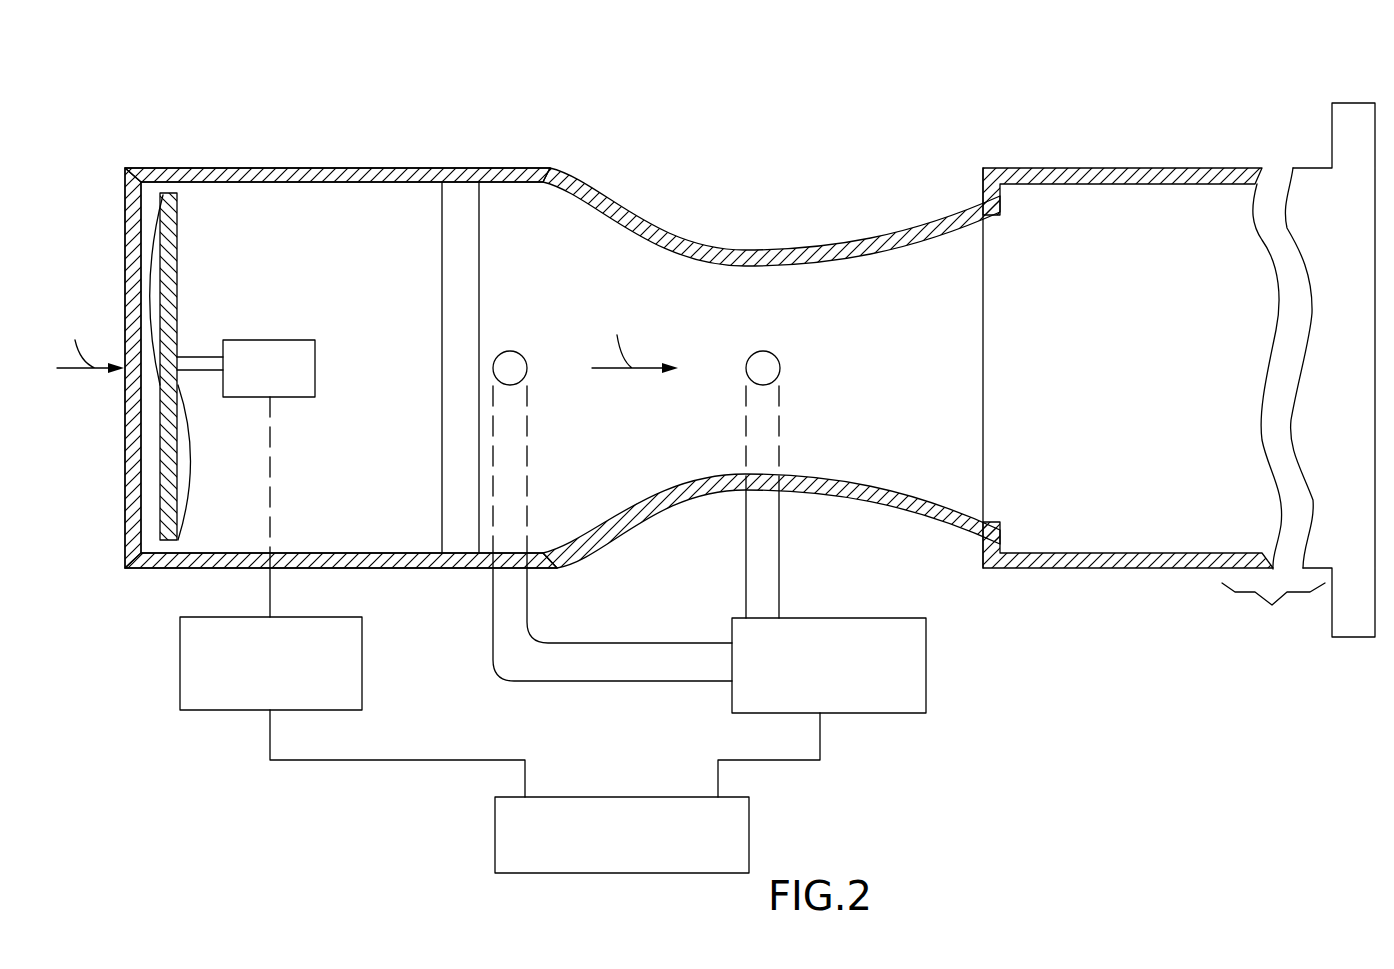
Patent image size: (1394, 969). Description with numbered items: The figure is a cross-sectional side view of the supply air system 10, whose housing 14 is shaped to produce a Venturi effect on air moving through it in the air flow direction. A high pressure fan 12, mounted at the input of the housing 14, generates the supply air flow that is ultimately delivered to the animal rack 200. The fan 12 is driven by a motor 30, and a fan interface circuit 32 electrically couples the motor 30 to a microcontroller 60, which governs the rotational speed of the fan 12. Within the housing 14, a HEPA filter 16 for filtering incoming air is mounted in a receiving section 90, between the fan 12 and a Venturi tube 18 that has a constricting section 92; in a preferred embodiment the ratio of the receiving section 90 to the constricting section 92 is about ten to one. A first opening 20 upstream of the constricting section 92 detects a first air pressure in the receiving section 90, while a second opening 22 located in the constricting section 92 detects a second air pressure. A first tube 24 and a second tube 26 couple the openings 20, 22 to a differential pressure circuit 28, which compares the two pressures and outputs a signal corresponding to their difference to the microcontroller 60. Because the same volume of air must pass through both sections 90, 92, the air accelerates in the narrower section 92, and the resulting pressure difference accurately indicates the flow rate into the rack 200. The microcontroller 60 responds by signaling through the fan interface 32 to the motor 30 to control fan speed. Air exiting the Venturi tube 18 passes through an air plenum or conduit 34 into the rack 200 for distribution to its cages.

The supply air system 10 is at (741, 136).
The high pressure fan 12 is at (152, 273).
The housing 14 is at (342, 156).
The HEPA filter 16 is at (480, 253).
The Venturi tube 18 is at (818, 243).
The first opening 20 is at (516, 352).
The second opening 22 is at (777, 357).
The first tube 24 is at (614, 642).
The second tube 26 is at (773, 563).
The differential pressure circuit 28 is at (927, 652).
The motor 30 is at (285, 340).
The fan interface circuit 32 is at (365, 640).
The air plenum or conduit 34 is at (1170, 168).
The microcontroller 60 is at (628, 797).
The receiving section 90 is at (269, 254).
The constricting section 92 is at (749, 323).
The animal rack 200 is at (1348, 90).